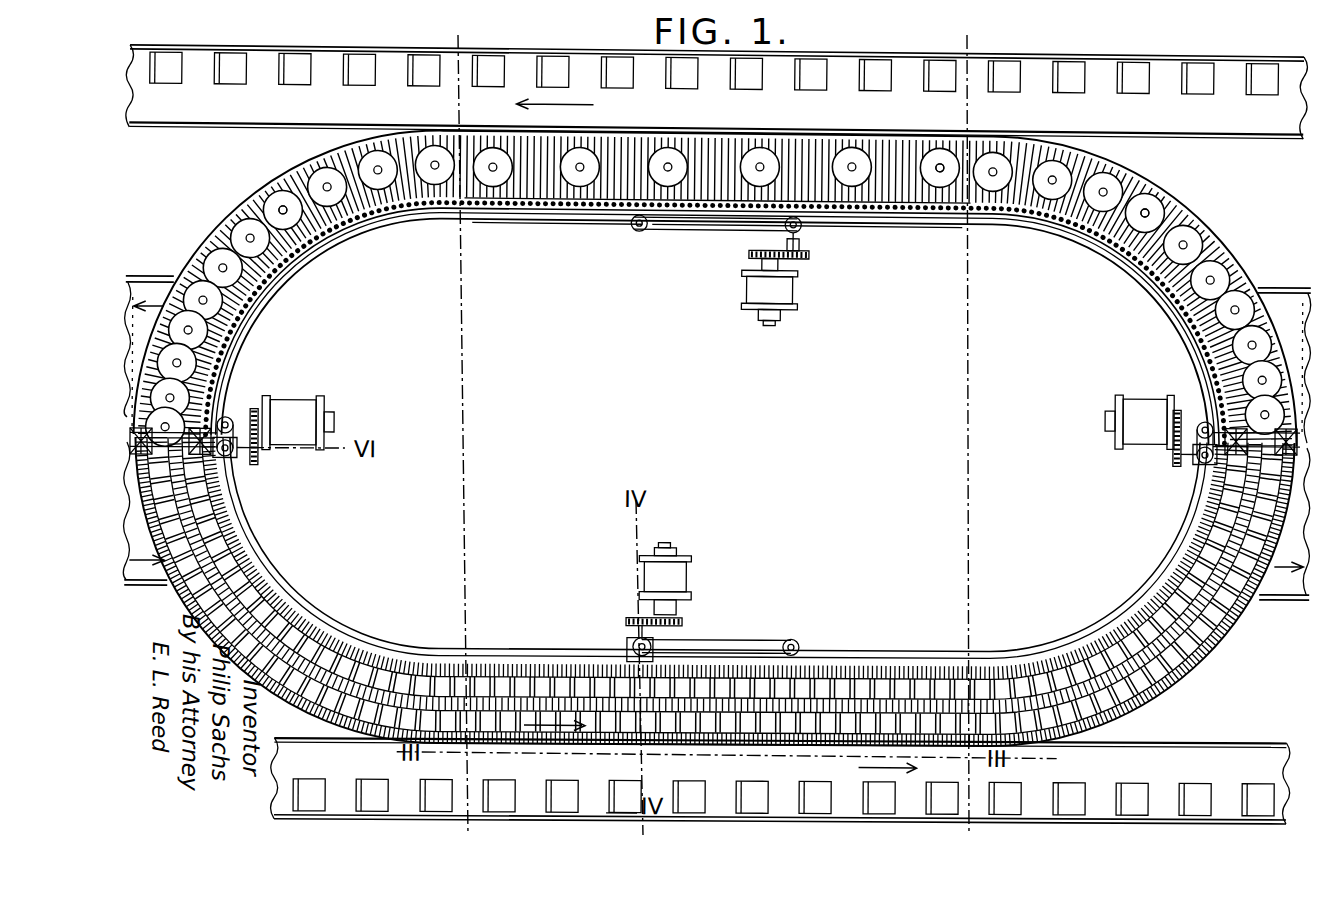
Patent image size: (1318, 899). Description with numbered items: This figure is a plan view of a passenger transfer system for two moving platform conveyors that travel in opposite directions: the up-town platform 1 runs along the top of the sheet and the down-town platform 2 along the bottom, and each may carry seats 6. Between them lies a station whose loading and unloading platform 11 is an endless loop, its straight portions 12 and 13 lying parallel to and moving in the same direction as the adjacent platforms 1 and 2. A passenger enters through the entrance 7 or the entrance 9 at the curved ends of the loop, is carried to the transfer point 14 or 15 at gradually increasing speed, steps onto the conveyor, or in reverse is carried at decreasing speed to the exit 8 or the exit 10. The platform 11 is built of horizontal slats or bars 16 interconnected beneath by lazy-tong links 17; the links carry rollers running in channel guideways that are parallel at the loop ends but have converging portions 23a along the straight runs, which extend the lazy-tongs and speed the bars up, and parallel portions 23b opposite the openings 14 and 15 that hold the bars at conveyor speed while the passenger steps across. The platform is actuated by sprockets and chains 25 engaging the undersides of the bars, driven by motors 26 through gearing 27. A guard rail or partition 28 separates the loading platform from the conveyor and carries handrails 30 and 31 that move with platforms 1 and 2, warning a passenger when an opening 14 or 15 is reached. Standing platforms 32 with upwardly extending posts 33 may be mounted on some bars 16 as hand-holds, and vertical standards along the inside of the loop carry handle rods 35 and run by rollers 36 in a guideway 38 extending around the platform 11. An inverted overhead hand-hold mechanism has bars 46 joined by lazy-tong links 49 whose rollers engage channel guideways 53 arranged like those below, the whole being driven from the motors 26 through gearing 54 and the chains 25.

The up-town platform 1 is at (259, 72).
The down-town platform 2 is at (1232, 752).
The seats 6 is at (166, 88).
The entrance 7 is at (1282, 294).
The exit 8 is at (148, 286).
The entrance 9 is at (145, 513).
The exit 10 is at (1284, 524).
The loading and unloading platform 11 is at (714, 365).
The straight portion 12 is at (561, 214).
The straight portion 13 is at (881, 667).
The transfer point 14 is at (719, 140).
The transfer point 15 is at (707, 747).
The slats or bars 16 is at (309, 180).
The lazy-tong links 17 is at (410, 140).
The converging portions 23a is at (516, 240).
The parallel portions 23b is at (687, 142).
The chains 25 is at (763, 149).
The motors 26 is at (748, 290).
The gearing 27 is at (778, 254).
The guard rail or partition 28 is at (865, 138).
The handrail 30 is at (259, 136).
The handrail 31 is at (1172, 740).
The platforms 32 is at (275, 212).
The posts 33 is at (280, 215).
The handle rod 35 is at (430, 219).
The rollers 36 is at (443, 228).
The guideway 38 is at (316, 254).
The bars 46 is at (254, 550).
The lazy-tong links 49 is at (231, 570).
The channel guideways 53 is at (234, 543).
The gearing 54 is at (238, 464).